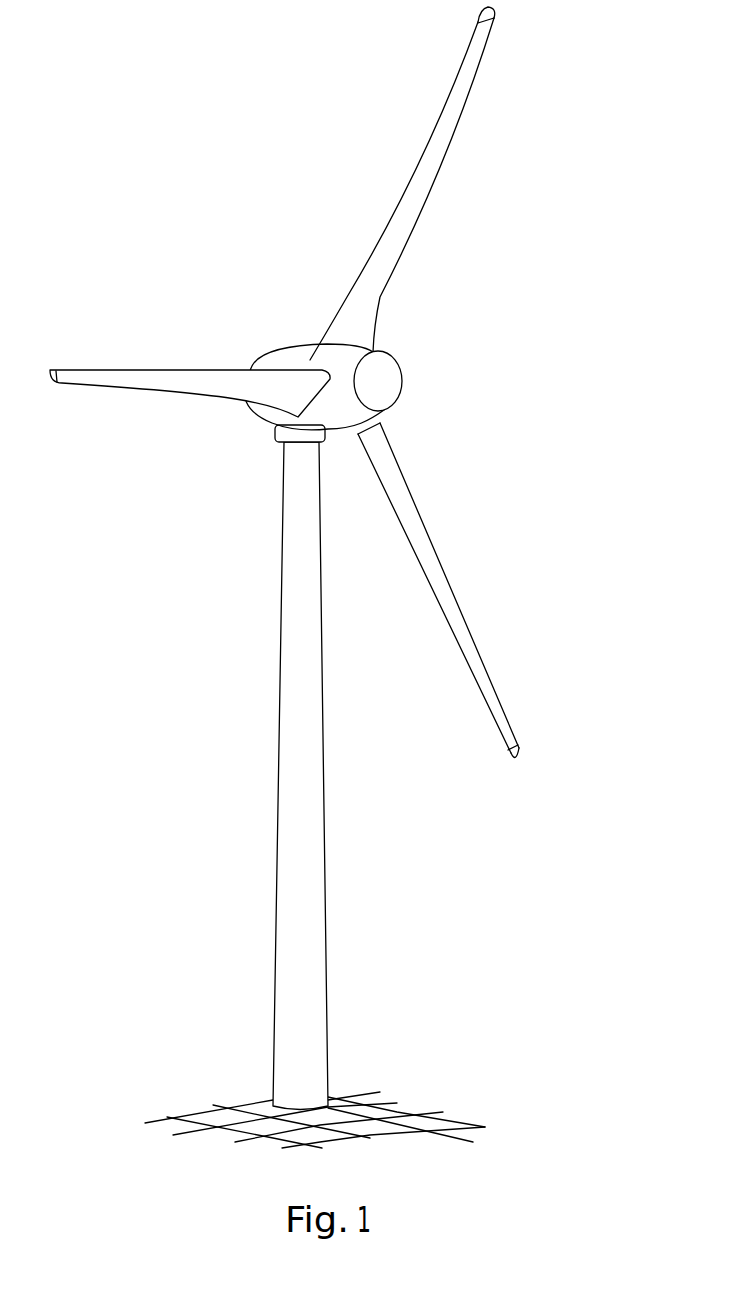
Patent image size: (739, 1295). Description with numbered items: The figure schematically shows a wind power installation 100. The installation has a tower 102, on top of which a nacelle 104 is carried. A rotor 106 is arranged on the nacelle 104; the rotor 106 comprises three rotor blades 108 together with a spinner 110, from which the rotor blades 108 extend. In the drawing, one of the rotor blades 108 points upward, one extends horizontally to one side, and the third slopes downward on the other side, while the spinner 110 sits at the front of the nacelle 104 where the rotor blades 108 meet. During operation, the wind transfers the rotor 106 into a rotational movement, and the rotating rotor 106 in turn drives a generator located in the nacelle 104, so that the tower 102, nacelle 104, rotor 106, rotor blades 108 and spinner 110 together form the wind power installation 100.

The wind power installation 100 is at (333, 577).
The tower 102 is at (307, 877).
The nacelle 104 is at (293, 356).
The rotor 106 is at (333, 382).
The rotor blades 108 is at (440, 135).
The spinner 110 is at (382, 382).